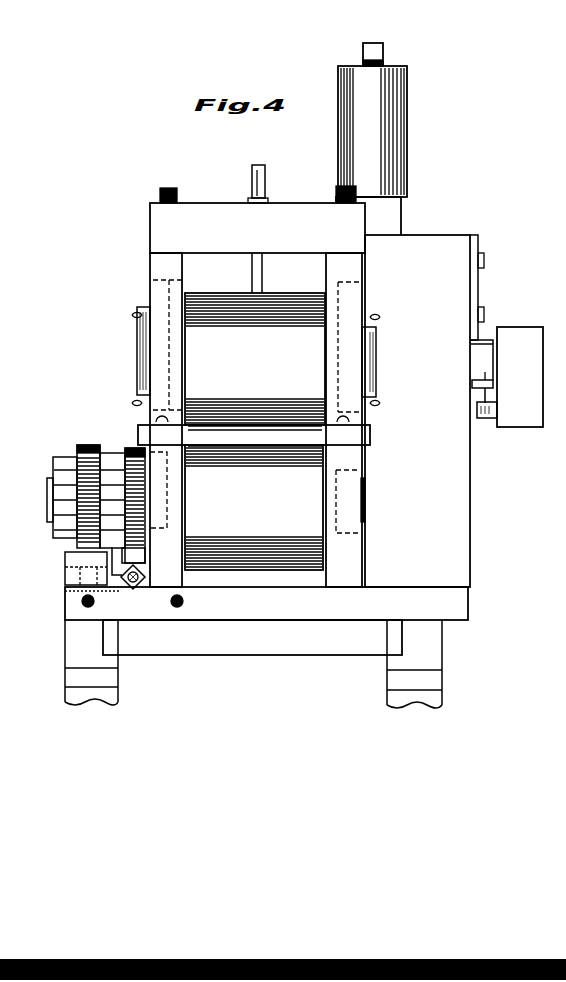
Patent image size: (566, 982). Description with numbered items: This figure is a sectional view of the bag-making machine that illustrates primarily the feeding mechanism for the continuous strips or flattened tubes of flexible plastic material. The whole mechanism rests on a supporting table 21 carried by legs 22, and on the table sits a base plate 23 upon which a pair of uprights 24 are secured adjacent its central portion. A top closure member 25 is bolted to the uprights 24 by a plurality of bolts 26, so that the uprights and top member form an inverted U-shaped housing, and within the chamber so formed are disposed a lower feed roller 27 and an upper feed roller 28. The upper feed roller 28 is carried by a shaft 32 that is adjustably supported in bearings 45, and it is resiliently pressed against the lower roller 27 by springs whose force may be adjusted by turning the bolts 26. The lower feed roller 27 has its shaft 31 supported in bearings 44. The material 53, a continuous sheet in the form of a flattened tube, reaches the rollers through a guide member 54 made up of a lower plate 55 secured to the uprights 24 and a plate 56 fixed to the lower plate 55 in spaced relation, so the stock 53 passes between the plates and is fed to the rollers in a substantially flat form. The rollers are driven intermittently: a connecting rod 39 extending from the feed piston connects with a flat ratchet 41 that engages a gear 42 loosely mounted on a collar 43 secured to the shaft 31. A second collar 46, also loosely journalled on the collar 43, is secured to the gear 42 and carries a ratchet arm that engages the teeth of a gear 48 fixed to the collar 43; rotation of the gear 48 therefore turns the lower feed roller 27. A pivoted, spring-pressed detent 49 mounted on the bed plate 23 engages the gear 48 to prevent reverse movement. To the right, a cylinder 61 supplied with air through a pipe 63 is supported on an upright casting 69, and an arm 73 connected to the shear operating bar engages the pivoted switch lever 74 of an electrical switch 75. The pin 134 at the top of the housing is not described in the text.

The supporting table 21 is at (260, 642).
The legs 22 is at (128, 676).
The base plate 23 is at (468, 610).
The uprights 24 is at (150, 299).
The top closure member 25 is at (199, 218).
The bolts 26 is at (160, 194).
The lower feed roller 27 is at (254, 507).
The upper feed roller 28 is at (255, 359).
The shaft 31 is at (47, 490).
The shaft 32 is at (137, 352).
The connecting rod 39 is at (134, 590).
The flat ratchet 41 is at (118, 555).
The gear 42 is at (135, 450).
The collar 43 is at (54, 468).
The bearings 44 is at (384, 534).
The bearings 45 is at (153, 312).
The collar 46 is at (110, 455).
The gear 48 is at (88, 446).
The pivoted detent 49 is at (77, 552).
The material 53 is at (203, 435).
The guide member 54 is at (200, 425).
The lower plate 55 is at (268, 447).
The plate 56 is at (258, 427).
The cylinder 61 is at (408, 116).
The pipe 63 is at (384, 52).
The upright casting 69 is at (470, 474).
The arm 73 is at (494, 383).
The switch lever 74 is at (488, 400).
The electrical switch 75 is at (524, 428).
The pin 134 is at (266, 182).